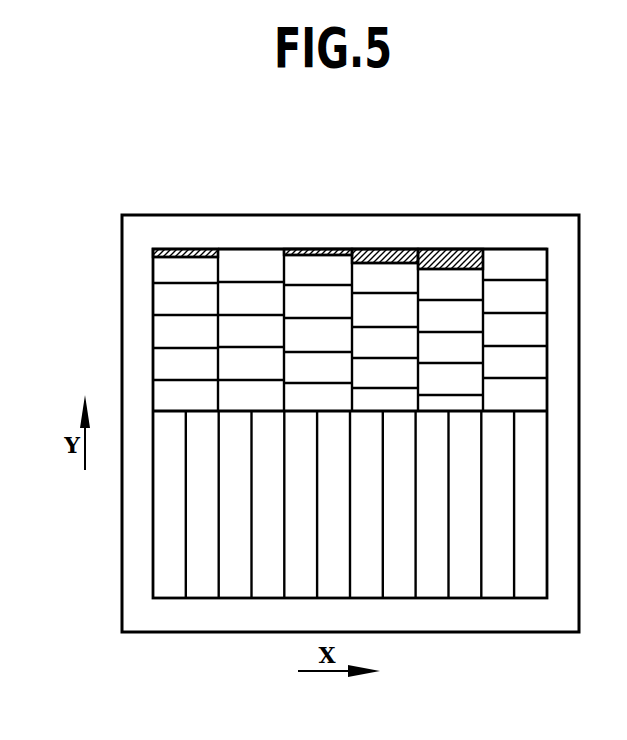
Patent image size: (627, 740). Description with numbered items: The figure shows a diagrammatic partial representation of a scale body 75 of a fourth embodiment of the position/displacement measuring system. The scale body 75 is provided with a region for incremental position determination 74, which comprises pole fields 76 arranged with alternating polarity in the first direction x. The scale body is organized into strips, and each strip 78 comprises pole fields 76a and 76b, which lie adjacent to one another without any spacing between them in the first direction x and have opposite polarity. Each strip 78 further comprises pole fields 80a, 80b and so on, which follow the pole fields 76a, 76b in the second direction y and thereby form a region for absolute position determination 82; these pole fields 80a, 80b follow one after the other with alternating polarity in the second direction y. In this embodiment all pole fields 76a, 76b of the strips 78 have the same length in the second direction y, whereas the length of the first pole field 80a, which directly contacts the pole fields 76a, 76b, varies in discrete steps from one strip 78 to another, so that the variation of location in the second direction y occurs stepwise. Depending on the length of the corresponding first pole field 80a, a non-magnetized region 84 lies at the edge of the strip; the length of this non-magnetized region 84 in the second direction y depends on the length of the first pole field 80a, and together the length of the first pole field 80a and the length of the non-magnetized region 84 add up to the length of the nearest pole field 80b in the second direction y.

The region for incremental position determination 74 is at (146, 553).
The scale body 75 is at (122, 633).
The pole fields 76 is at (297, 559).
The pole field 76a is at (165, 484).
The pole field 76b is at (203, 522).
The strip 78 is at (299, 274).
The first pole field 80a is at (155, 395).
The pole field 80b is at (155, 365).
The region for absolute position determination 82 is at (162, 240).
The non-magnetized region 84 is at (433, 249).